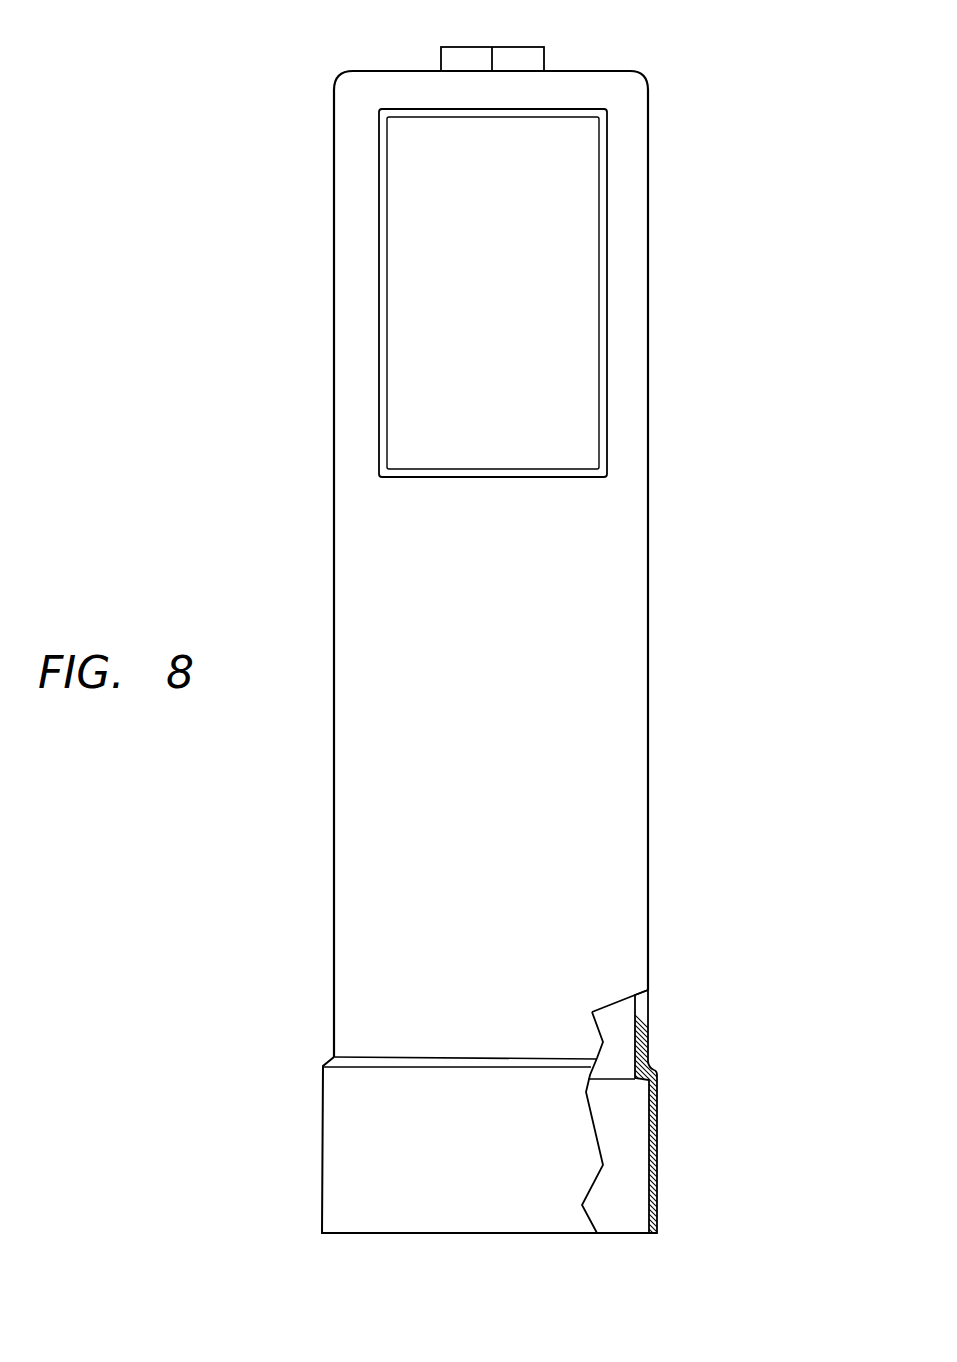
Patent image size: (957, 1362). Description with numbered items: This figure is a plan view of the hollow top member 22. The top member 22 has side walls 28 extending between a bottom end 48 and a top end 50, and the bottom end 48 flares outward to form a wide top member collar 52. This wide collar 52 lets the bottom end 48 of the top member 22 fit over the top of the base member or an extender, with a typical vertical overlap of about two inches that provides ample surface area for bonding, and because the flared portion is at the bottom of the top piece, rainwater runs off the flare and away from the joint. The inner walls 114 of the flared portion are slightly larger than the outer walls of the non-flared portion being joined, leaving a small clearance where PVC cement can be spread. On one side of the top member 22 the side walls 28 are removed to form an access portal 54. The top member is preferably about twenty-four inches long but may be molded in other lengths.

The top member 22 is at (543, 648).
The side walls 28 is at (512, 641).
The bottom end 48 is at (562, 1237).
The top end 50 is at (394, 70).
The top member collar 52 is at (336, 1161).
The access portal 54 is at (396, 289).
The inner walls 114 is at (647, 1155).